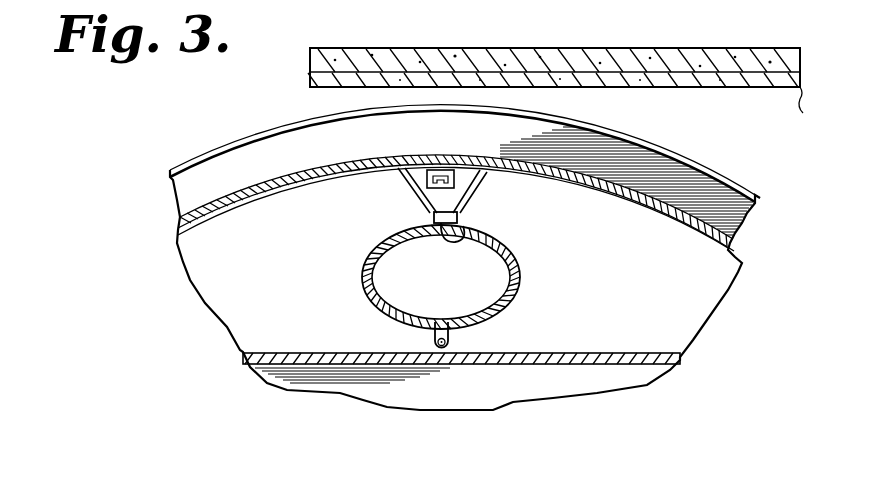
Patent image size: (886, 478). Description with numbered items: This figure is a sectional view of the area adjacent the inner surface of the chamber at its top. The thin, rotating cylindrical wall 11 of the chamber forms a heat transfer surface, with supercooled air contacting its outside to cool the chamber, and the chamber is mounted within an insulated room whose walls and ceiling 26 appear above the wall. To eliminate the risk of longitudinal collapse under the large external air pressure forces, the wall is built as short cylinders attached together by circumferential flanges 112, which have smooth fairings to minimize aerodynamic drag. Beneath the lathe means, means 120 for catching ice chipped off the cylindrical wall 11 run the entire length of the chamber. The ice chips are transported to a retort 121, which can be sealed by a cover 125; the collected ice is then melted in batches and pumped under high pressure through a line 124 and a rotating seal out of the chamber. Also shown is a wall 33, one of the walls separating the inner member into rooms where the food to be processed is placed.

The walls and ceiling 26 is at (627, 48).
The cylindrical wall 11 is at (235, 195).
The circumferential flanges 112 is at (713, 198).
The means for catching ice 120 is at (580, 274).
The wall 33 is at (642, 353).
The retort 121 is at (363, 266).
The cover 125 is at (465, 235).
The line 124 is at (450, 337).